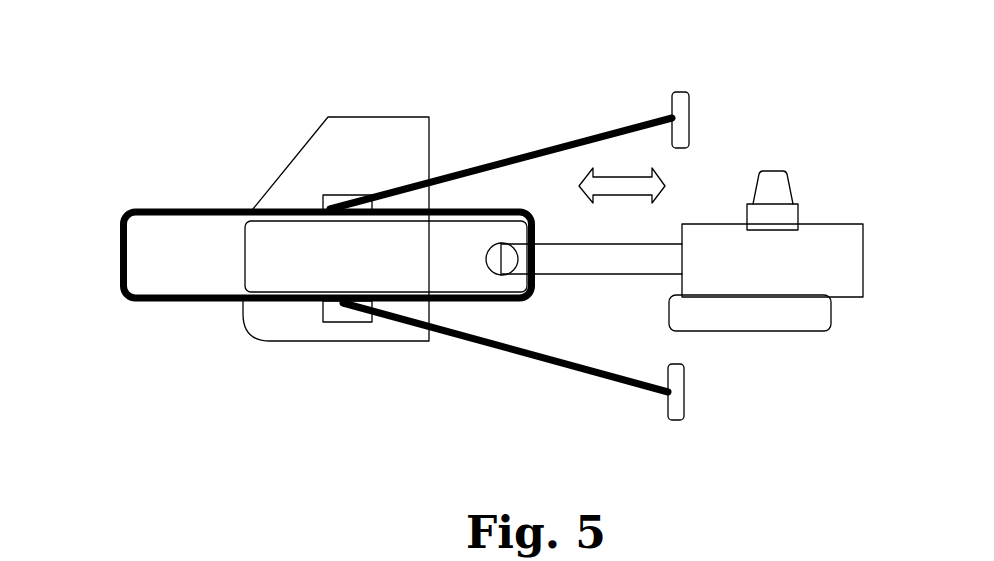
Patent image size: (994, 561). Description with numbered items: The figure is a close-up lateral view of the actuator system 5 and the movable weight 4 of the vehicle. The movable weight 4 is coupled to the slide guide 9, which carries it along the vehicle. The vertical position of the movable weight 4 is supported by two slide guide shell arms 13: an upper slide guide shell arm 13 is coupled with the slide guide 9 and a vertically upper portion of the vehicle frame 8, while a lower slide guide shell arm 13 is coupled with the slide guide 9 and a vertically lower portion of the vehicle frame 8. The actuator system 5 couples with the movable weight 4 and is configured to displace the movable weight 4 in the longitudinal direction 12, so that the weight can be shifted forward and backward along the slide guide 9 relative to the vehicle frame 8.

The movable weight 4 is at (287, 167).
The actuator system 5 is at (863, 257).
The vehicle frame 8 is at (690, 103).
The slide guide 9 is at (120, 230).
The longitudinal direction 12 is at (628, 177).
The slide guide shell arm 13 is at (507, 157).